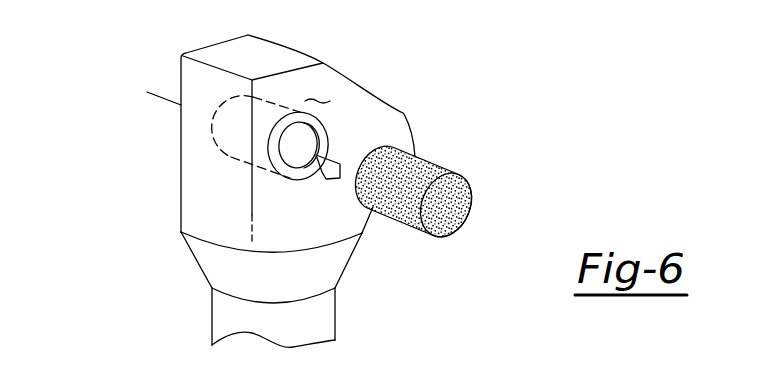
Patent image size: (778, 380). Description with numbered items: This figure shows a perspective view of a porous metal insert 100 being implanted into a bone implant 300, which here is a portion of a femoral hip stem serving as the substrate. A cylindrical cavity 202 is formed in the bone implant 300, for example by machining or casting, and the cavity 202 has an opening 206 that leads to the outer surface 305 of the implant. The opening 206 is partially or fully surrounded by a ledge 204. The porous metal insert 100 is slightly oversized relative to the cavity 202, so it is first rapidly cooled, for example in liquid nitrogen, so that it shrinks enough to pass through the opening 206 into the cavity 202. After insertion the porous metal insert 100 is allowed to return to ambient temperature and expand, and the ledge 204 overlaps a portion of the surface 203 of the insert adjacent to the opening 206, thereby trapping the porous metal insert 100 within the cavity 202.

The bone implant 300 is at (170, 82).
The outer surface 305 is at (318, 88).
The ledge 204 is at (318, 126).
The cylindrical cavity 202 is at (298, 149).
The opening 206 is at (283, 157).
The porous metal insert 100 is at (433, 158).
The surface of the porous metal insert 203 is at (460, 202).